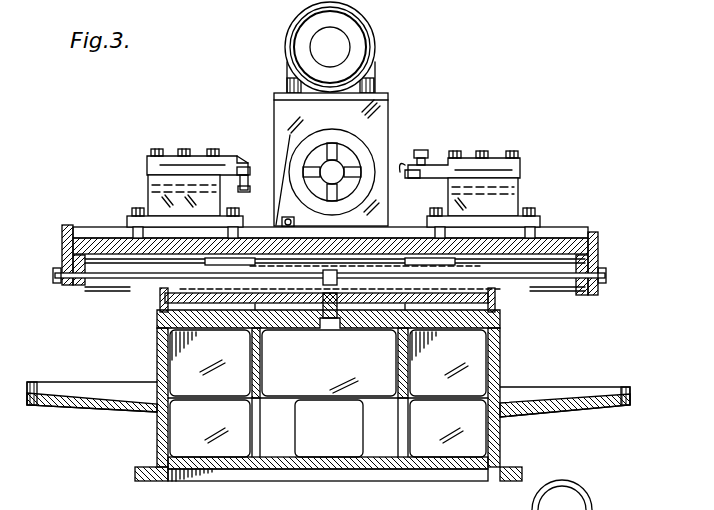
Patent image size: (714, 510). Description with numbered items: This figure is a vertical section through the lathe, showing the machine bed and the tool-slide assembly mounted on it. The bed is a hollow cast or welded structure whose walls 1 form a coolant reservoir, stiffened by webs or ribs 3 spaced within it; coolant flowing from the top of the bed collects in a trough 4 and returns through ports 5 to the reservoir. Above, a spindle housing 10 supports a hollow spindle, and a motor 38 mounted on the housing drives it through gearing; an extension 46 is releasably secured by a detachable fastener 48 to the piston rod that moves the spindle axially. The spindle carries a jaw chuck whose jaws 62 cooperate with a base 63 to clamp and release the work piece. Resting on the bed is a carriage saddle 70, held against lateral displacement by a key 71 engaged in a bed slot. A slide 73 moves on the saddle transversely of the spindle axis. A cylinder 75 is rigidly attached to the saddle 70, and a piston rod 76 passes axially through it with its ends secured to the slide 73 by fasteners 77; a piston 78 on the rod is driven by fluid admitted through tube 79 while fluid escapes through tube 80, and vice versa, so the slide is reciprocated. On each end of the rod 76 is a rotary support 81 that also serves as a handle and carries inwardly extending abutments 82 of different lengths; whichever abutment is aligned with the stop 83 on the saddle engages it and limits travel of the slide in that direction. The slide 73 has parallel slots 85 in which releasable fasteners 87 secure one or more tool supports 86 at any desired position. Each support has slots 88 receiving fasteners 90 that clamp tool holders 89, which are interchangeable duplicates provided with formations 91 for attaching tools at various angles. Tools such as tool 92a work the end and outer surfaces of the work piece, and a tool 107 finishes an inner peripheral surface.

The walls 1 is at (313, 469).
The webs or ribs 3 is at (262, 368).
The trough 4 is at (100, 410).
The ports 5 is at (168, 400).
The spindle housing 10 is at (355, 115).
The motor 38 is at (338, 46).
The extension 46 is at (305, 240).
The detachable fastener 48 is at (294, 210).
The chuck jaws 62 is at (332, 150).
The chuck base 63 is at (360, 156).
The carriage saddle 70 is at (438, 328).
The key 71 is at (327, 318).
The slide 73 is at (560, 238).
The cylinder 75 is at (362, 312).
The piston rod 76 is at (521, 300).
The fasteners 77 is at (62, 247).
The piston 78 is at (337, 285).
The tube 79 is at (450, 238).
The tube 80 is at (243, 240).
The rotary support 81 is at (79, 290).
The abutments 82 is at (127, 290).
The stop 83 is at (165, 302).
The slots 85 is at (400, 237).
The tool support 86 is at (160, 204).
The releasable fasteners 87 is at (134, 209).
The slots 88 is at (172, 193).
The tool holder 89 is at (150, 166).
The releasable fasteners 90 is at (187, 149).
The formations 91 is at (243, 167).
The tool 92a is at (405, 172).
The tool 107 is at (240, 163).